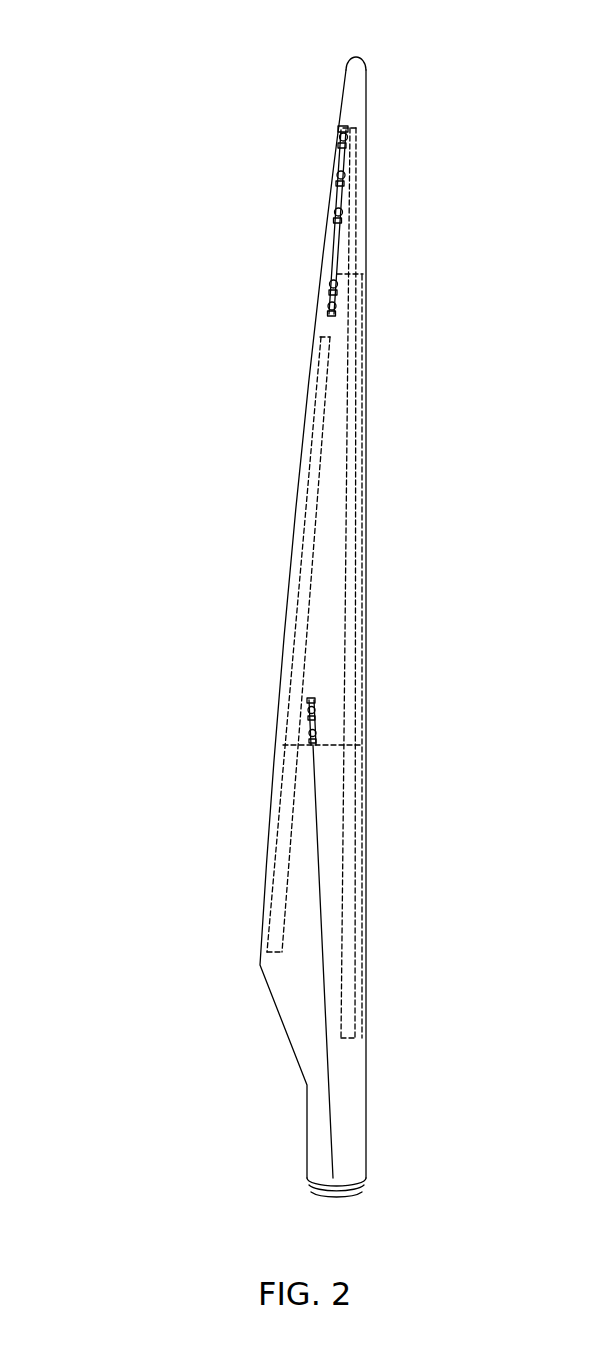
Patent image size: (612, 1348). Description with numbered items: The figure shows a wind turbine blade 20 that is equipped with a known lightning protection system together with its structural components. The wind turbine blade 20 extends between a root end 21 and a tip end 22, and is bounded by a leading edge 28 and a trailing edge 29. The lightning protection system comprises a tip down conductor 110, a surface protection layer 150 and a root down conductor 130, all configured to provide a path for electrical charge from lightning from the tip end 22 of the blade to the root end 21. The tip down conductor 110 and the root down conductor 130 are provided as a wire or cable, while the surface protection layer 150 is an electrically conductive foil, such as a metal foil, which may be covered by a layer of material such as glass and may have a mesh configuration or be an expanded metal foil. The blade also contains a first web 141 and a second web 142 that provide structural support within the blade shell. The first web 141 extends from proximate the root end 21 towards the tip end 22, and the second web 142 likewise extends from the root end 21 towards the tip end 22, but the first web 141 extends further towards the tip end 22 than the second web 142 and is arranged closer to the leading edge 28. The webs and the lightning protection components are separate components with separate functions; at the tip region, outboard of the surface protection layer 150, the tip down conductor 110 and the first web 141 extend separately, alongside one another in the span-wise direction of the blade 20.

The wind turbine blade 20 is at (273, 626).
The root end 21 is at (320, 1197).
The tip end 22 is at (350, 57).
The leading edge 28 is at (368, 913).
The trailing edge 29 is at (268, 835).
The tip down conductor 110 is at (330, 248).
The root down conductor 130 is at (330, 1064).
The first web 141 is at (354, 818).
The second web 142 is at (282, 760).
The surface protection layer 150 is at (285, 638).